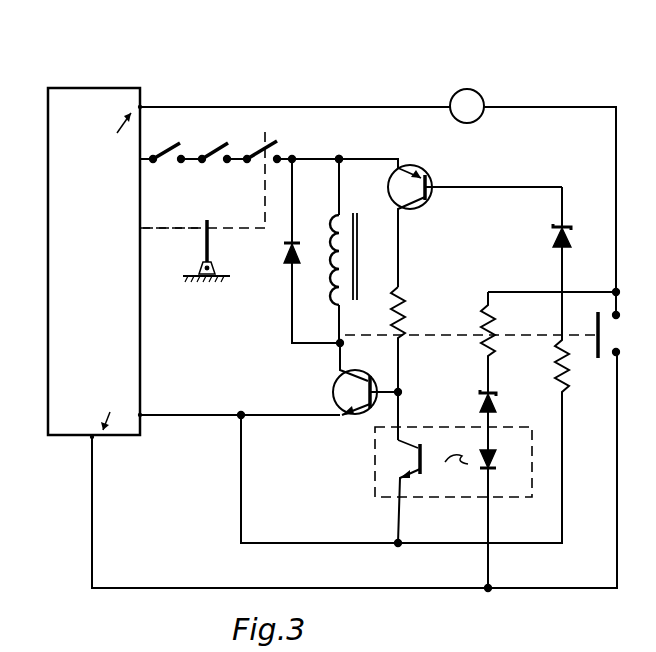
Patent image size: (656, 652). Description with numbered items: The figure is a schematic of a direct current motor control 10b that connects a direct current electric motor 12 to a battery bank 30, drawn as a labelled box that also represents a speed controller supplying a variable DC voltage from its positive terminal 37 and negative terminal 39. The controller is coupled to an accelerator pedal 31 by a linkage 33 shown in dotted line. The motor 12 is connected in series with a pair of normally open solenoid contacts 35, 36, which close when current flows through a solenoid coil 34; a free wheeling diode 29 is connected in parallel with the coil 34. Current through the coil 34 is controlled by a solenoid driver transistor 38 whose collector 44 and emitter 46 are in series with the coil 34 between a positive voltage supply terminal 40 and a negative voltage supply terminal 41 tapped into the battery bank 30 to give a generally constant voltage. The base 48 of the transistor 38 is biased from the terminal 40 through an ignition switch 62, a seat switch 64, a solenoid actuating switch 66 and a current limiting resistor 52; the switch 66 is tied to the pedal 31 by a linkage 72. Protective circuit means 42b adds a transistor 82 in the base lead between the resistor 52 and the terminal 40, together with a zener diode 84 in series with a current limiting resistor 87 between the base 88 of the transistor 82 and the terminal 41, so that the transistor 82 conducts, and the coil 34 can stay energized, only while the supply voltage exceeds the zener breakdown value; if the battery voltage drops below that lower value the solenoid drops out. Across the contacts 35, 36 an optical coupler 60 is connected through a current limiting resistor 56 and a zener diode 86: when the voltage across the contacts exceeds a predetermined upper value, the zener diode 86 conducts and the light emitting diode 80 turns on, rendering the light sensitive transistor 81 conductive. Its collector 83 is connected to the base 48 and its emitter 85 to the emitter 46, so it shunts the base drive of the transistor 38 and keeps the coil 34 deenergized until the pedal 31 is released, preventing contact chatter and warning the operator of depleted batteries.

The motor control 10b is at (442, 78).
The direct current electric motor 12 is at (470, 90).
The free wheeling diode 29 is at (288, 252).
The battery bank 30 is at (152, 347).
The accelerator pedal 31 is at (212, 233).
The linkage 33 is at (167, 236).
The solenoid coil 34 is at (336, 286).
The solenoid contact 35 is at (340, 157).
The solenoid contact 36 is at (618, 354).
The positive terminal 37 is at (140, 107).
The solenoid driver transistor 38 is at (339, 404).
The negative terminal 39 is at (91, 438).
The positive voltage supply terminal 40 is at (152, 162).
The negative voltage supply terminal 41 is at (141, 416).
The protective circuit means 42b is at (495, 172).
The collector 44 is at (338, 372).
The emitter 46 is at (346, 418).
The base 48 is at (380, 384).
The current limiting resistor 52 is at (404, 300).
The current limiting resistor 56 is at (478, 327).
The optical coupler 60 is at (442, 478).
The ignition switch 62 is at (176, 143).
The seat switch 64 is at (210, 165).
The solenoid actuating switch 66 is at (266, 140).
The linkage 72 is at (265, 199).
The light emitting diode 80 is at (497, 458).
The light sensitive transistor 81 is at (415, 478).
The transistor 82 is at (475, 203).
The collector 83 is at (412, 440).
The zener diode 84 is at (551, 236).
The emitter 85 is at (398, 476).
The zener diode 86 is at (498, 397).
The current limiting resistor 87 is at (558, 346).
The base 88 is at (432, 191).